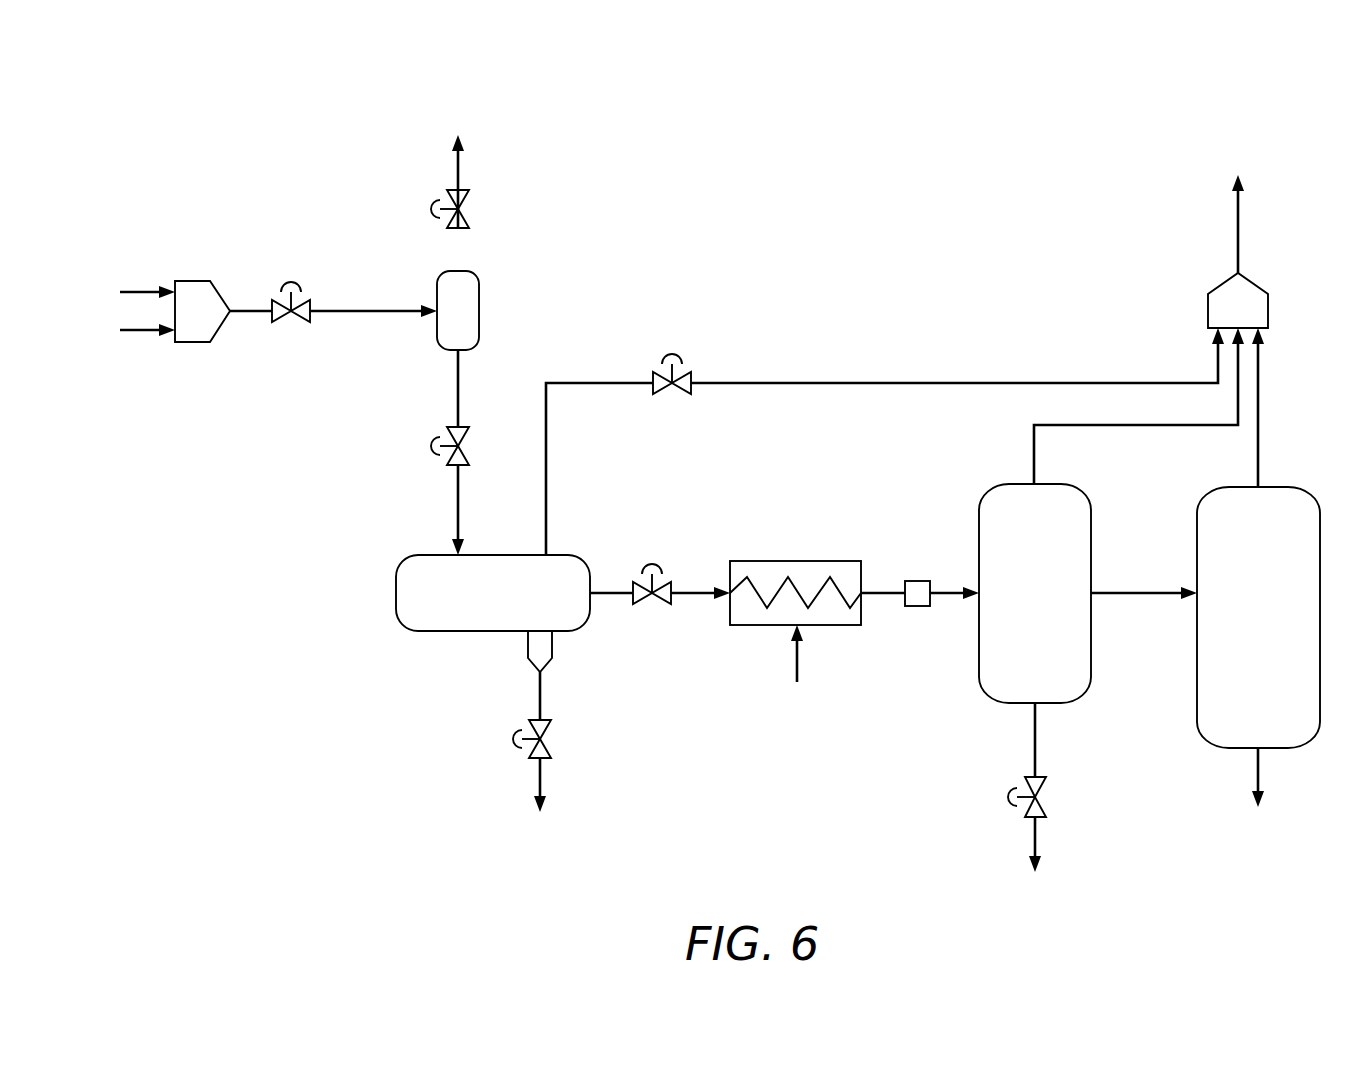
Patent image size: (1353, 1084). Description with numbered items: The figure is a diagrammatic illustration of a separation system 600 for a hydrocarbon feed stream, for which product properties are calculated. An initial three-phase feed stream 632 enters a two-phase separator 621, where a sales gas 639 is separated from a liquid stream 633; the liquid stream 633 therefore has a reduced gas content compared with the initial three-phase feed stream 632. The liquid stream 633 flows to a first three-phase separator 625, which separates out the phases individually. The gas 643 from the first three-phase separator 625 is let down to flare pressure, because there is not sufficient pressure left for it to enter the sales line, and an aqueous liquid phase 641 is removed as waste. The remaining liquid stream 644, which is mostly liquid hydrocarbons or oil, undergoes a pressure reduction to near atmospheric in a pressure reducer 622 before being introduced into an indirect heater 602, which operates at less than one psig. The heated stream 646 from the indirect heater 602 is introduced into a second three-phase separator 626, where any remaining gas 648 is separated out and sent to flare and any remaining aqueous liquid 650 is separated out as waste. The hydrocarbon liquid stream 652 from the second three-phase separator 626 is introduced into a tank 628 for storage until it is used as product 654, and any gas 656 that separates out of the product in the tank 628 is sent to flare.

The separation system 600 is at (1178, 72).
The indirect heater 602 is at (770, 561).
The two-phase separator 621 is at (479, 301).
The pressure reducer 622 is at (645, 601).
The first three-phase separator 625 is at (396, 585).
The second three-phase separator 626 is at (979, 665).
The tank 628 is at (1197, 706).
The initial three-phase feed stream 632 is at (357, 310).
The liquid stream 633 is at (457, 390).
The sales gas 639 is at (457, 170).
The aqueous liquid phase 641 is at (540, 695).
The gas 643 is at (546, 478).
The remaining liquid stream 644 is at (668, 594).
The heated stream 646 is at (883, 590).
The remaining gas 648 is at (1138, 428).
The remaining aqueous liquid 650 is at (1035, 742).
The hydrocarbon liquid stream 652 is at (1140, 590).
The product 654 is at (1256, 780).
The gas 656 is at (1260, 398).